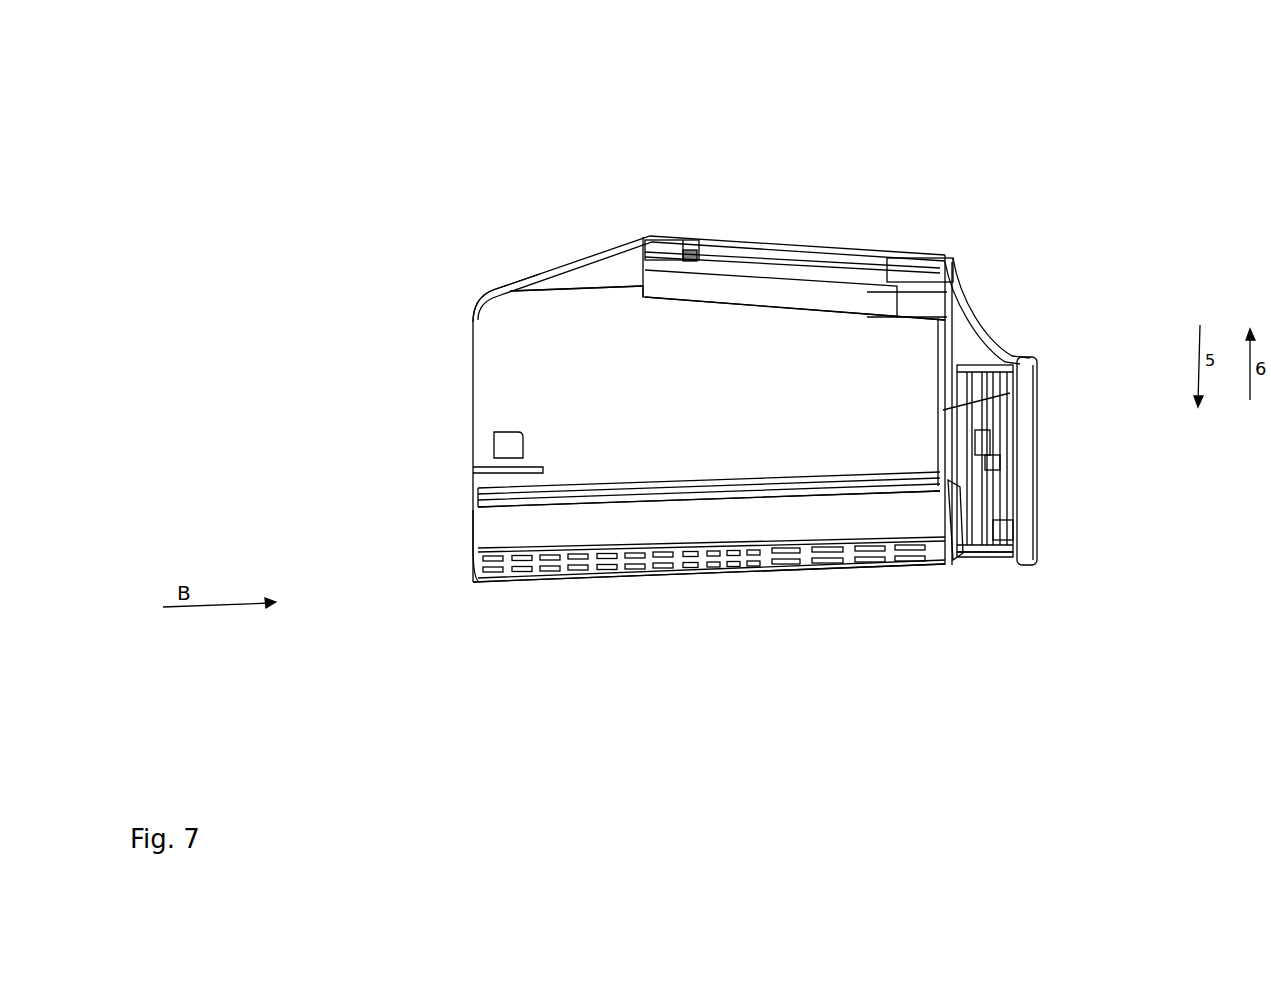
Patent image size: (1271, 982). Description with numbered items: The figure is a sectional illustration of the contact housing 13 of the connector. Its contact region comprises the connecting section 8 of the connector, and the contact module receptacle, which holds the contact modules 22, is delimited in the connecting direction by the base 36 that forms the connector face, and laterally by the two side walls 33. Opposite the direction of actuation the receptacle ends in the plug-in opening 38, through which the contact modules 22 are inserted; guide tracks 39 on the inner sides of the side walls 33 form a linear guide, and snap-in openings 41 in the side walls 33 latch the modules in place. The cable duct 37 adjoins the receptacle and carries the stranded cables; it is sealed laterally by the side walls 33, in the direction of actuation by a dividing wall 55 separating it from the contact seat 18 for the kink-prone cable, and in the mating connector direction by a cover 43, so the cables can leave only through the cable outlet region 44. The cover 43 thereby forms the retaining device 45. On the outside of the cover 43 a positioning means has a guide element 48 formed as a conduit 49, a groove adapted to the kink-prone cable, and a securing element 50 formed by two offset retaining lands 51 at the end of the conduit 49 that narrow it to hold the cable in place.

The connecting section 8 is at (465, 596).
The contact housing 13 is at (963, 107).
The contact seat 18 is at (975, 351).
The contact module 22 is at (507, 528).
The side wall 33 is at (515, 378).
The base 36 is at (643, 570).
The cable duct 37 is at (627, 341).
The plug-in opening 38 is at (460, 498).
The guide track 39 is at (753, 488).
The snap-in opening 41 is at (500, 440).
The cover 43 is at (752, 254).
The cable outlet region 44 is at (475, 299).
The retaining device 45 is at (815, 324).
The guide element 48 is at (820, 247).
The conduit 49 is at (865, 290).
The securing element 50 is at (658, 238).
The retaining land 51 is at (683, 250).
The dividing wall 55 is at (1033, 402).